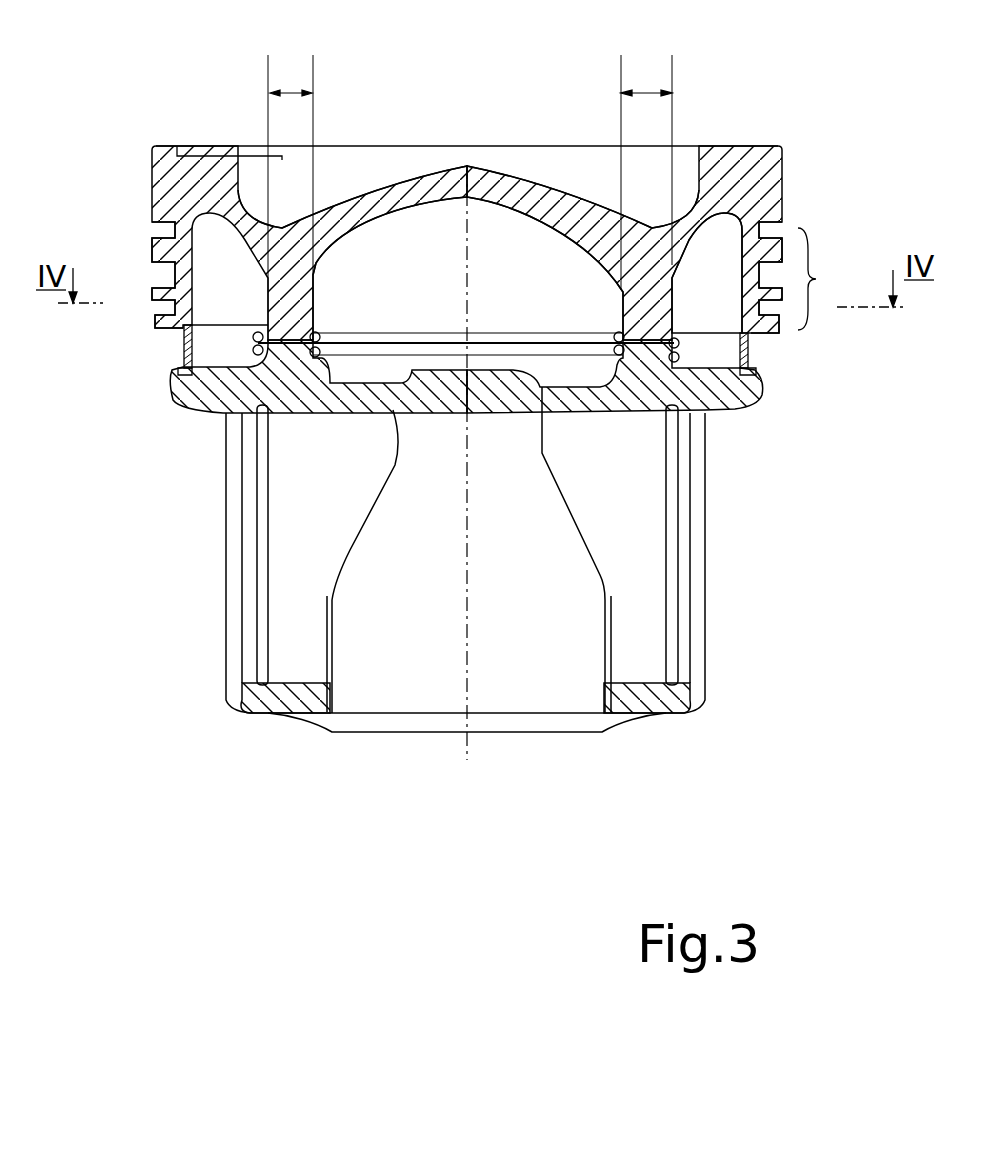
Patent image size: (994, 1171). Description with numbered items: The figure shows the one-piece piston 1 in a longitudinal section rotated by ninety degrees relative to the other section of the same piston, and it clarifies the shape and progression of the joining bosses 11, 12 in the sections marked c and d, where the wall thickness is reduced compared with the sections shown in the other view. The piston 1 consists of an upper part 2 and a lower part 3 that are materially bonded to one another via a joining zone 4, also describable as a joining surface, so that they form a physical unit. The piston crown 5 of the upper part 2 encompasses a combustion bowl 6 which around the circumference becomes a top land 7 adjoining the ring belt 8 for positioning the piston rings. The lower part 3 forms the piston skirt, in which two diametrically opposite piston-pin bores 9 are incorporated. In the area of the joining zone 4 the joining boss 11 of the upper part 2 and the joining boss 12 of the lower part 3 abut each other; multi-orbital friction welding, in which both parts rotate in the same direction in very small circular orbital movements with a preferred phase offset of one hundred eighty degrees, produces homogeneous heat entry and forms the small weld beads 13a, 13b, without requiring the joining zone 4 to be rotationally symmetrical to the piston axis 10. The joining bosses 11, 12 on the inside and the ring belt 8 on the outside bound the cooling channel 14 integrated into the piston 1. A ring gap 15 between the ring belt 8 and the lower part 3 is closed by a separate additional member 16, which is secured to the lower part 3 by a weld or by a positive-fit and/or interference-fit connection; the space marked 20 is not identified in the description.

The piston 1 is at (712, 133).
The upper part 2 is at (796, 186).
The lower part 3 is at (712, 612).
The joining zone 4 is at (183, 329).
The piston crown 5 is at (384, 146).
The combustion bowl 6 is at (413, 145).
The top land 7 is at (148, 183).
The ring belt 8 is at (795, 277).
The piston-pin bores 9 is at (297, 488).
The piston axis 10 is at (470, 692).
The joining boss 11 is at (290, 274).
The joining boss 12 is at (280, 353).
The weld bead 13a is at (253, 340).
The weld bead 13b is at (317, 395).
The cooling channel 14 is at (718, 302).
The ring gap 15 is at (757, 342).
The additional member 16 is at (758, 358).
The hollow space 20 is at (432, 292).